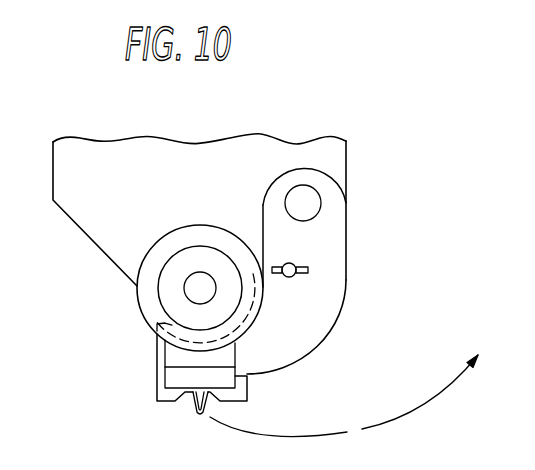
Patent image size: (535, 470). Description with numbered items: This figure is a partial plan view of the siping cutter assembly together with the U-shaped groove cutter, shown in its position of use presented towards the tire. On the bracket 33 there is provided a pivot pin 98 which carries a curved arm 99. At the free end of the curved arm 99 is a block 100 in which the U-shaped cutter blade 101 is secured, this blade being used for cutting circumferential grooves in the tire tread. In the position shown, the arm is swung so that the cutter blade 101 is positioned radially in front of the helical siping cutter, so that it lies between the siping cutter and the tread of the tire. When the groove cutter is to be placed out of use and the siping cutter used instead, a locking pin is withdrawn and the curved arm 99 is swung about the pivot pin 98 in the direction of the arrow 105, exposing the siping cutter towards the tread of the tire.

The bracket 33 is at (105, 223).
The pivot pin 98 is at (314, 206).
The curved arm 99 is at (335, 281).
The block 100 is at (228, 379).
The U-shaped cutter blade 101 is at (193, 413).
The arrow 105 is at (418, 407).